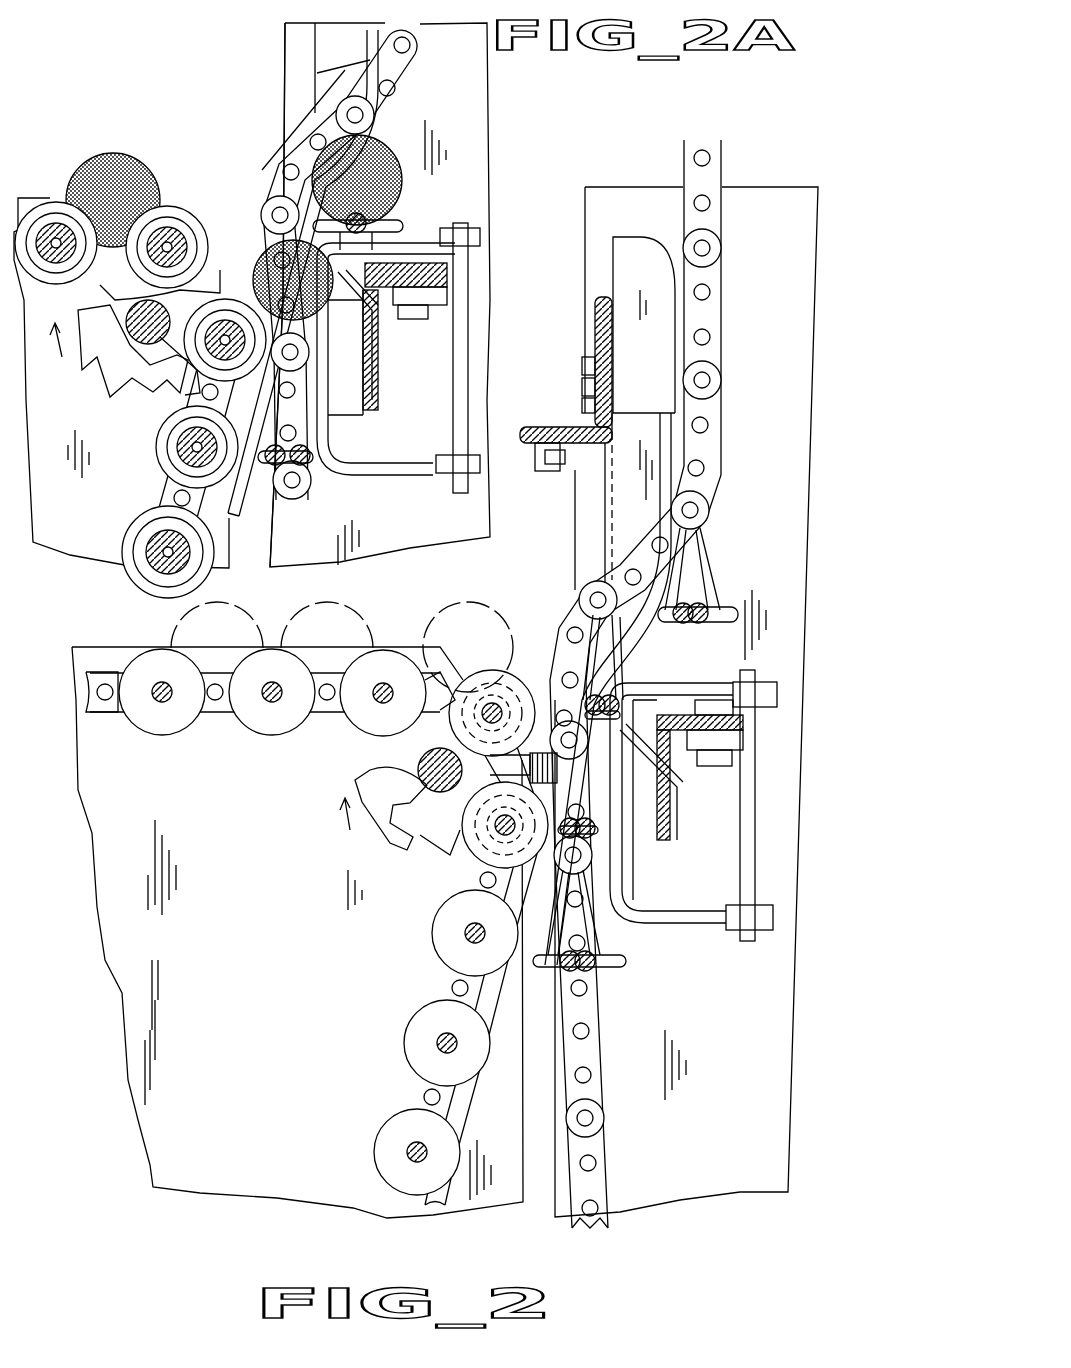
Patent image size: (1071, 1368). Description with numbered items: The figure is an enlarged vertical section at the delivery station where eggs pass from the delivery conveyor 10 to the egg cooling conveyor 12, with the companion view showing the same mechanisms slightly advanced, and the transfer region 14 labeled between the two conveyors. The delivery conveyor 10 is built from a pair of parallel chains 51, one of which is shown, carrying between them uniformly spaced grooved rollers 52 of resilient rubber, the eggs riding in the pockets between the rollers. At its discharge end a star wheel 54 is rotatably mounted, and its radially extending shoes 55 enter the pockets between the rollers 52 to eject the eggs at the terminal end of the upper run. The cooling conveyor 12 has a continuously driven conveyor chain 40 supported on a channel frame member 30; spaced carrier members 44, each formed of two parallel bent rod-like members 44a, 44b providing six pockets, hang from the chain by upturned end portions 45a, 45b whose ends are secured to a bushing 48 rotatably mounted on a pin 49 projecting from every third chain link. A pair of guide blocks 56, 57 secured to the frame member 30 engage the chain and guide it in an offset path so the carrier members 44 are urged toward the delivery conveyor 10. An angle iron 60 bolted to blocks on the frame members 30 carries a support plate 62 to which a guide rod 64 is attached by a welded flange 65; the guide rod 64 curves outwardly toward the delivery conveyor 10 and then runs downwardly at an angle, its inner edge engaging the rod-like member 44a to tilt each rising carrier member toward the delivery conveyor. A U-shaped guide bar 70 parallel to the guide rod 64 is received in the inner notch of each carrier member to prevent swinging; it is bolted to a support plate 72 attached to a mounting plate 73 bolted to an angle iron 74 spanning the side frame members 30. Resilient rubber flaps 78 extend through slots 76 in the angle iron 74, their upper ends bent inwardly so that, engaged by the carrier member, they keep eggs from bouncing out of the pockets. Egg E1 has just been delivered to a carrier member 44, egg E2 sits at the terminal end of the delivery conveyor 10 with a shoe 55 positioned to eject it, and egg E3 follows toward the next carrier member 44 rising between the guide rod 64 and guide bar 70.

In FIG. 2A, the delivery conveyor 10 is at (48, 196).
In FIG. 2, the delivery conveyor 10 is at (110, 668).
In FIG. 2A, the egg cooling conveyor 12 is at (428, 70).
In FIG. 2, the egg cooling conveyor 12 is at (620, 552).
In FIG. 2A, the transfer mechanism 14 is at (292, 128).
In FIG. 2, the transfer mechanism 14 is at (545, 640).
In FIG. 2A, the supporting frame member 30 is at (488, 87).
In FIG. 2, the supporting frame member 30 is at (775, 188).
In FIG. 2A, the conveyor chain 40 is at (412, 45).
In FIG. 2, the conveyor chain 40 is at (720, 213).
In FIG. 2A, the carrier member 44 is at (415, 214).
In FIG. 2, the carrier member 44 is at (715, 562).
In FIG. 2A, the rod-like member 44a is at (270, 285).
In FIG. 2, the rod-like member 44a is at (690, 605).
In FIG. 2A, the rod-like member 44b is at (380, 340).
In FIG. 2, the rod-like member 44b is at (715, 610).
In FIG. 2A, the upturned end portion 45a is at (376, 150).
In FIG. 2, the upturned end portion 45a is at (700, 530).
In FIG. 2A, the upturned end portion 45b is at (400, 185).
In FIG. 2, the upturned end portion 45b is at (718, 548).
In FIG. 2A, the bushing 48 is at (352, 112).
In FIG. 2, the bushing 48 is at (710, 242).
In FIG. 2A, the pin 49 is at (362, 115).
In FIG. 2, the pin 49 is at (705, 256).
In FIG. 2A, the chain 51 is at (164, 488).
In FIG. 2, the chain 51 is at (100, 712).
In FIG. 2A, the grooved roller 52 is at (172, 204).
In FIG. 2, the grooved roller 52 is at (258, 732).
In FIG. 2A, the star wheel 54 is at (110, 308).
In FIG. 2, the star wheel 54 is at (410, 830).
In FIG. 2A, the shoe 55 is at (200, 286).
In FIG. 2, the shoe 55 is at (432, 692).
In FIG. 2A, the guide block 56 is at (360, 443).
In FIG. 2, the guide block 56 is at (632, 882).
In FIG. 2A, the guide block 57 is at (313, 100).
In FIG. 2, the guide block 57 is at (645, 365).
In FIG. 2, the angle iron 60 is at (595, 330).
In FIG. 2, the support plate 62 is at (538, 462).
In FIG. 2A, the guide rod 64 is at (234, 512).
In FIG. 2, the guide rod 64 is at (590, 668).
In FIG. 2A, the welded flange 65 is at (365, 45).
In FIG. 2, the welded flange 65 is at (636, 425).
In FIG. 2A, the U-shaped guide bar 70 is at (352, 422).
In FIG. 2, the U-shaped guide bar 70 is at (680, 910).
In FIG. 2A, the support plate 72 is at (470, 278).
In FIG. 2, the support plate 72 is at (755, 765).
In FIG. 2A, the mounting plate 73 is at (448, 297).
In FIG. 2, the mounting plate 73 is at (730, 744).
In FIG. 2A, the angle iron 74 is at (406, 275).
In FIG. 2, the angle iron 74 is at (745, 722).
In FIG. 2A, the slot 76 is at (430, 340).
In FIG. 2, the slot 76 is at (690, 765).
In FIG. 2A, the resilient rubber flap 78 is at (392, 318).
In FIG. 2, the resilient rubber flap 78 is at (640, 760).
In FIG. 2A, the egg E1 is at (400, 162).
In FIG. 2, the egg E1 is at (642, 683).
In FIG. 2A, the egg E2 is at (262, 260).
In FIG. 2, the egg E2 is at (480, 600).
In FIG. 2A, the egg E3 is at (103, 154).
In FIG. 2, the egg E3 is at (340, 606).